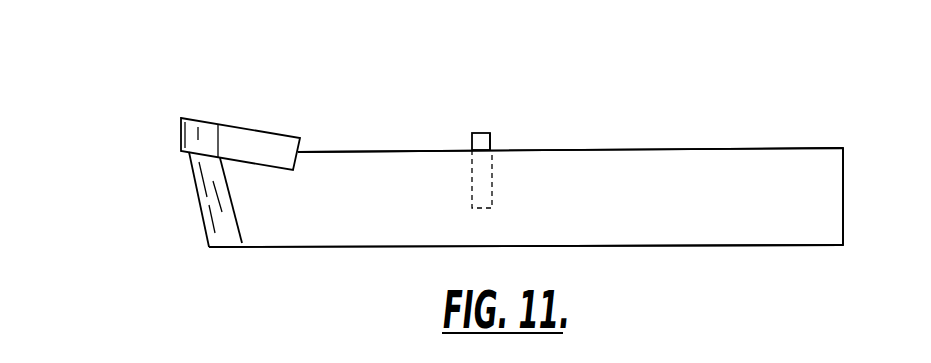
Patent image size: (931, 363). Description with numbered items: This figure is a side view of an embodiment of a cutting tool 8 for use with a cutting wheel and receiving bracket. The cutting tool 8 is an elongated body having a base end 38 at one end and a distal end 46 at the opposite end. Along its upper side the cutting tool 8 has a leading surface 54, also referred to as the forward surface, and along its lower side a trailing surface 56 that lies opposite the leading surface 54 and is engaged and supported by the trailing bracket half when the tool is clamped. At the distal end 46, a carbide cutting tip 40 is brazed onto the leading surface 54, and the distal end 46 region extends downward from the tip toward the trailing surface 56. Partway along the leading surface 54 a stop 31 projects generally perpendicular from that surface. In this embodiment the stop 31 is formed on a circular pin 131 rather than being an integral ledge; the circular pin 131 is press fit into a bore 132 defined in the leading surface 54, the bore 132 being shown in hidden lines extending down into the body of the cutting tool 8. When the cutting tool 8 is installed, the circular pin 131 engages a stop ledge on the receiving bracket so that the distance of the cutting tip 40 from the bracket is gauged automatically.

The cutting tool 8 is at (602, 148).
The stop 31 is at (492, 140).
The base end 38 is at (773, 148).
The carbide cutting tip 40 is at (178, 123).
The distal end 46 is at (190, 203).
The leading surface 54 is at (313, 150).
The trailing surface 56 is at (670, 245).
The circular pin 131 is at (480, 133).
The bore 132 is at (495, 183).